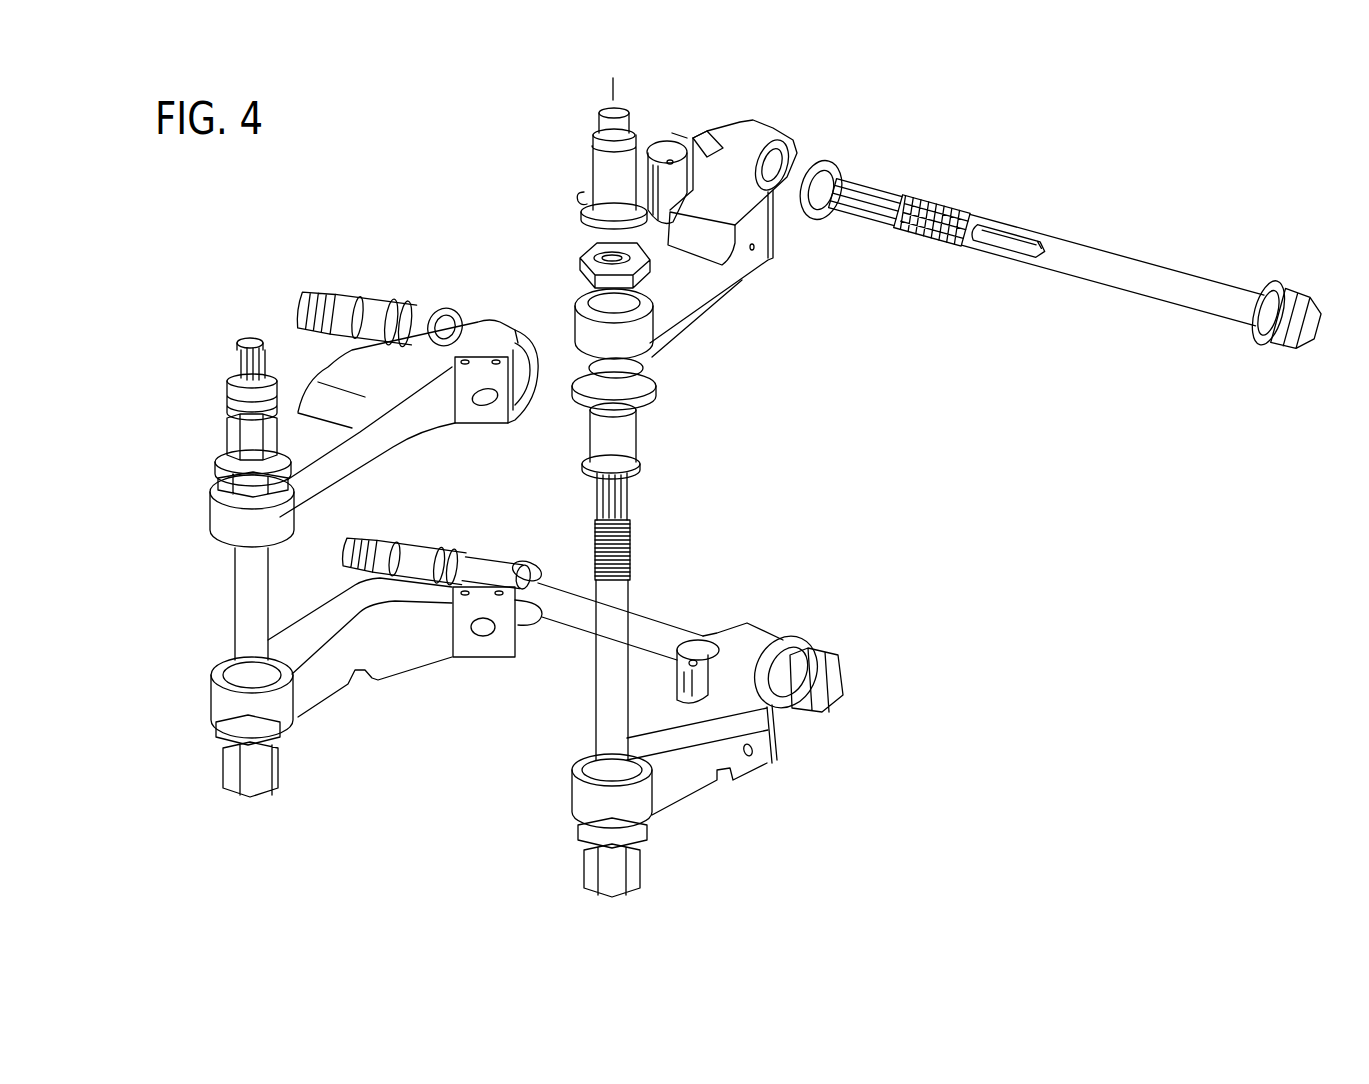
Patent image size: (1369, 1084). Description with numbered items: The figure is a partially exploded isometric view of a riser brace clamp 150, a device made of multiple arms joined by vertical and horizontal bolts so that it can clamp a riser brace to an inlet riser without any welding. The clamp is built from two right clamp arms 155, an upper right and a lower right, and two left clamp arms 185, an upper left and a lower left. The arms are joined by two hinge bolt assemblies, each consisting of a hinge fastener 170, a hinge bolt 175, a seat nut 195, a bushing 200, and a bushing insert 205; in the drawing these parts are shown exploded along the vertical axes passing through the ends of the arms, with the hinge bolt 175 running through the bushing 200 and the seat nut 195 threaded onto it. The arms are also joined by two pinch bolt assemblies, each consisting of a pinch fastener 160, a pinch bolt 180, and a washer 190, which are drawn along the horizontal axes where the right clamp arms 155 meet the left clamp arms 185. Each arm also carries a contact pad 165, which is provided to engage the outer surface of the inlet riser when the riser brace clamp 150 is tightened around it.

The riser brace clamp 150 is at (1003, 745).
The right clamp arm 155 is at (512, 547).
The pinch fastener 160 is at (340, 279).
The contact pad 165 is at (478, 426).
The hinge fastener 170 is at (277, 362).
The hinge bolt 175 is at (234, 612).
The pinch bolt 180 is at (1150, 262).
The left clamp arm 185 is at (675, 350).
The washer 190 is at (443, 310).
The seat nut 195 is at (212, 462).
The bushing 200 is at (210, 530).
The bushing insert 205 is at (650, 470).